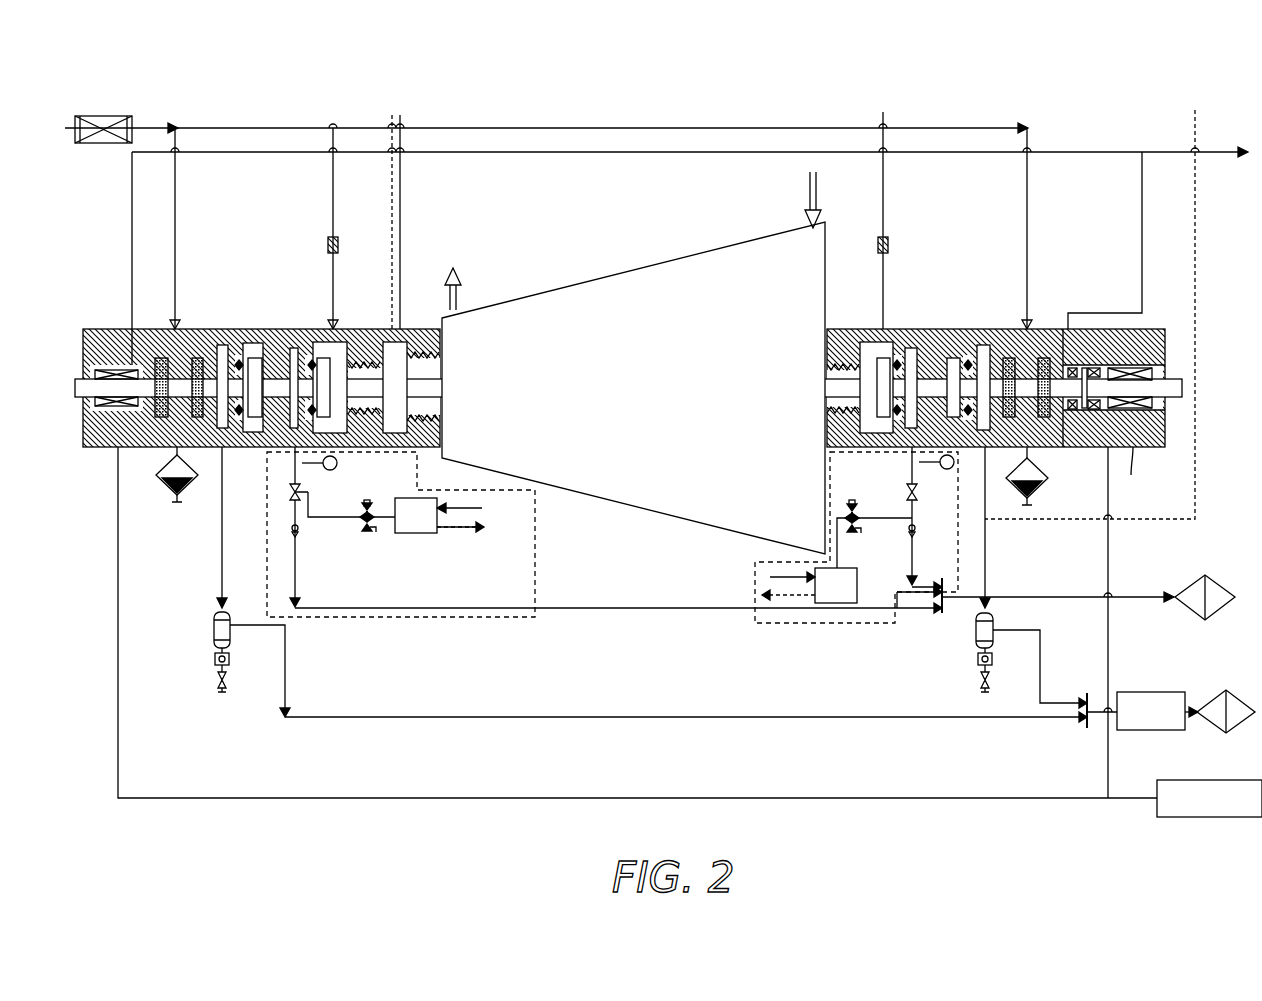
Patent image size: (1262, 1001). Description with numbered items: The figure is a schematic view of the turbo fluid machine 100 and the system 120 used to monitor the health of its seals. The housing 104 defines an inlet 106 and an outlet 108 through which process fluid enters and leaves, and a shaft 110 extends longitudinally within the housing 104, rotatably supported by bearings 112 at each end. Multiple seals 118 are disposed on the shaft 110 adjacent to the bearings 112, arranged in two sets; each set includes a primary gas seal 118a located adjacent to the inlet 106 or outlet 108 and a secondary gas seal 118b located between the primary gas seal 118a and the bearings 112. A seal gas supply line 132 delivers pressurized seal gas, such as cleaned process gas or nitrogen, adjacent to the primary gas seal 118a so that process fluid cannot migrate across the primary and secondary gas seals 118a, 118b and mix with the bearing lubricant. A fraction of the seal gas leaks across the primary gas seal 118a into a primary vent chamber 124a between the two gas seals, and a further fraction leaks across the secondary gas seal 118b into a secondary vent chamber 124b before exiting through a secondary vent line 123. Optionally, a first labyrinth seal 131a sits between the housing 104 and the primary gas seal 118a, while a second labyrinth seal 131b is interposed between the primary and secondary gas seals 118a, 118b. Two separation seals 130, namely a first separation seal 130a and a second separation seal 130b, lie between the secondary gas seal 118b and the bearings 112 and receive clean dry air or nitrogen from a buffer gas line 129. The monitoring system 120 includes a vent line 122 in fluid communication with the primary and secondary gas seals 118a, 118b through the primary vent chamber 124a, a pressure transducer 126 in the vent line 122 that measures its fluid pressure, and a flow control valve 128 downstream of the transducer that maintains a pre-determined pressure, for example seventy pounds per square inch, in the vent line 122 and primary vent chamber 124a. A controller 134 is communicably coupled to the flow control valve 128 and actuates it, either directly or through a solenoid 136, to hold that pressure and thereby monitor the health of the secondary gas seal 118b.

The turbo fluid machine 100 is at (1055, 100).
The housing 104 is at (418, 328).
The inlet 106 is at (816, 180).
The outlet 108 is at (460, 273).
The shaft 110 is at (80, 398).
The bearings 112 is at (110, 447).
The seals 118 is at (243, 447).
The primary gas seal 118a is at (311, 329).
The secondary gas seal 118b is at (242, 329).
The system 120 is at (397, 617).
The vent line 122 is at (295, 460).
The secondary vent line 123 is at (215, 588).
The primary vent chamber 124a is at (290, 329).
The secondary vent chamber 124b is at (224, 329).
The pressure transducer 126 is at (338, 463).
The flow control valve 128 is at (292, 500).
The buffer gas line 129 is at (175, 240).
The separation seals 130 is at (195, 329).
The first separation seal 130a is at (207, 447).
The second separation seal 130b is at (159, 447).
The first labyrinth seal 131a is at (360, 329).
The second labyrinth seal 131b is at (268, 329).
The seal gas supply line 132 is at (332, 211).
The controller 134 is at (626, 550).
The solenoid 136 is at (364, 506).